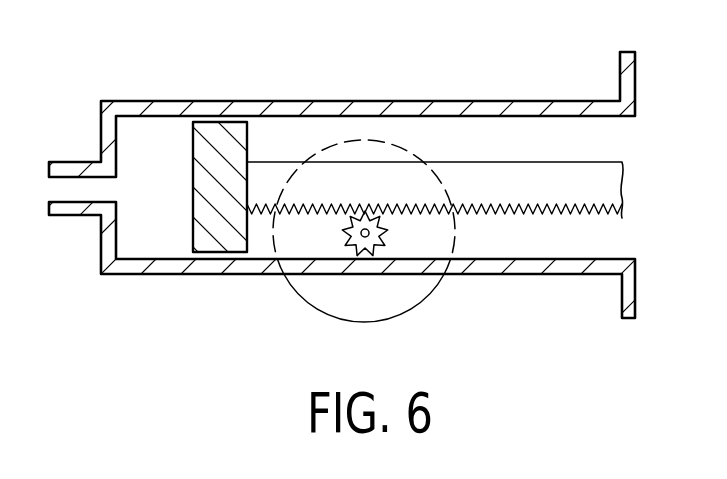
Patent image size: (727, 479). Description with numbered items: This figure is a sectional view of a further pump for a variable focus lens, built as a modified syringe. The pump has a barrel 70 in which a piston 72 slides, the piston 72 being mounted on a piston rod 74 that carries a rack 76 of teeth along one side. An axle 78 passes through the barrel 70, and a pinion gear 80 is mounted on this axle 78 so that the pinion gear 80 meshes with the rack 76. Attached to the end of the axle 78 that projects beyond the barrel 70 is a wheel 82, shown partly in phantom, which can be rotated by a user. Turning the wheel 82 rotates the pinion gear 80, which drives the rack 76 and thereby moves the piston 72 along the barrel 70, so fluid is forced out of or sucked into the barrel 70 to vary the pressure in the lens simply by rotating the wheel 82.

The barrel 70 is at (385, 100).
The piston 72 is at (207, 132).
The piston rod 74 is at (435, 184).
The rack 76 is at (503, 224).
The axle 78 is at (370, 238).
The pinion gear 80 is at (351, 244).
The wheel 82 is at (297, 291).